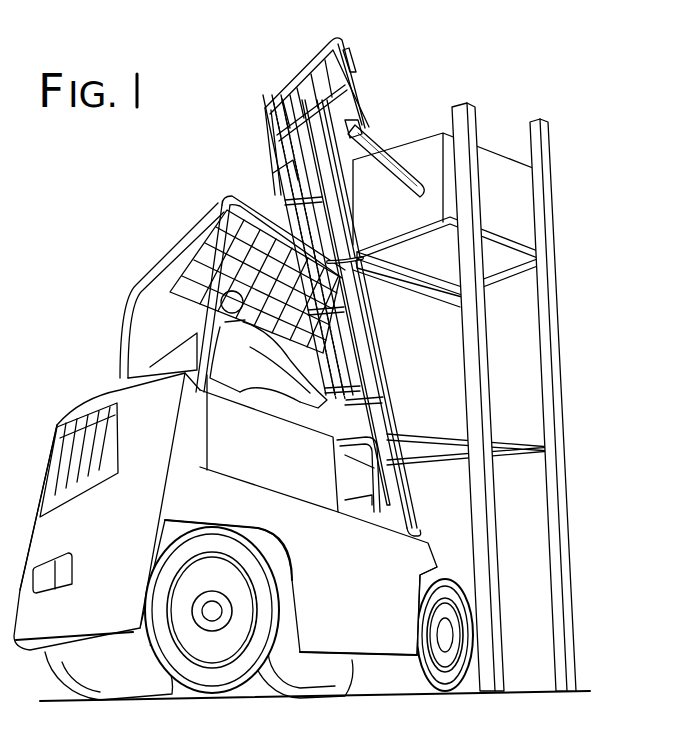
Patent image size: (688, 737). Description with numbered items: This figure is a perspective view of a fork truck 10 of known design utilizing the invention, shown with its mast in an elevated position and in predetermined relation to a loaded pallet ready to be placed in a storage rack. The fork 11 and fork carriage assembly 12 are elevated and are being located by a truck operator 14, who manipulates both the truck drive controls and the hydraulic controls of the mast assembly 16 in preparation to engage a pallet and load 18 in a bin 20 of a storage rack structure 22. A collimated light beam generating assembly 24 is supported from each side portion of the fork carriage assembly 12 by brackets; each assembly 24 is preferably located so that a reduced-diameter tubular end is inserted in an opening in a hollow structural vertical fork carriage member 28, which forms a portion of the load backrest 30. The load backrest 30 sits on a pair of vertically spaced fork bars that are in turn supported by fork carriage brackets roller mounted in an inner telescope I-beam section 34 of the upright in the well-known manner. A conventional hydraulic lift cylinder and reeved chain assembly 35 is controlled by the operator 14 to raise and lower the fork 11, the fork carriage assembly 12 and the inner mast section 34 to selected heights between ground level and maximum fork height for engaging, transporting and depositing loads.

The fork truck 10 is at (225, 533).
The fork 11 is at (388, 156).
The fork carriage assembly 12 is at (364, 100).
The truck operator 14 is at (227, 345).
The mast assembly 16 is at (380, 347).
The pallet and load 18 is at (520, 217).
The bin 20 is at (420, 208).
The storage rack structure 22 is at (560, 338).
The collimated light beam generating assembly 24 is at (350, 63).
The hollow structural vertical fork carriage member 28 is at (350, 78).
The load backrest 30 is at (292, 83).
The inner telescope I-beam section 34 is at (333, 182).
The hydraulic lift cylinder and reeved chain assembly 35 is at (292, 172).